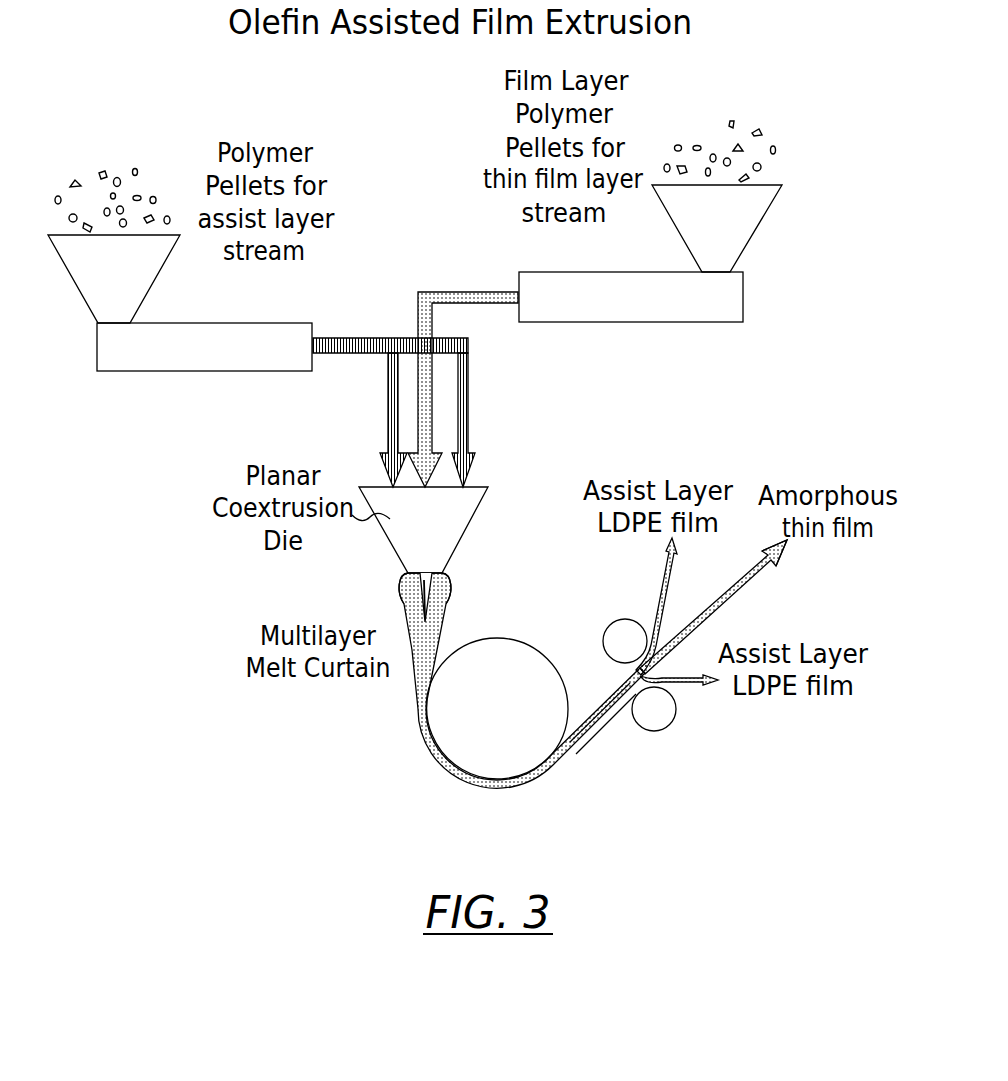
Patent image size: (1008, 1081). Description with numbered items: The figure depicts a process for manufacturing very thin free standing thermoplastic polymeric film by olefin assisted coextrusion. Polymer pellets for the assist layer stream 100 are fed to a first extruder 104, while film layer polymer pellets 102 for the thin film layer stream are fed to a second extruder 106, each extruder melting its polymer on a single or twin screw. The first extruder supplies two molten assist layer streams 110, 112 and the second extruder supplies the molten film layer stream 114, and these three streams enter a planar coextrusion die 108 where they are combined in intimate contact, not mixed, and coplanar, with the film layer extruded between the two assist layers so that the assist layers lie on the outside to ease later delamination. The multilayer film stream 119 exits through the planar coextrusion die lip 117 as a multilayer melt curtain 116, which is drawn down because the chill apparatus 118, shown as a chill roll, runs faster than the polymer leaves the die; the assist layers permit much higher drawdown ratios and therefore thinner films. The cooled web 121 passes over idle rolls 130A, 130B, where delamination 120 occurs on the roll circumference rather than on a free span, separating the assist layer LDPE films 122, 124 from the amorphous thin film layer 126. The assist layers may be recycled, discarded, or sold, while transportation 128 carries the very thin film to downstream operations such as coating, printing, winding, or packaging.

The assist layer prior to extrusion 100 is at (102, 175).
The film layer prior to extrusion 102 is at (763, 132).
The first extruder 104 is at (108, 372).
The second extruder 106 is at (745, 287).
The planar coextrusion die 108 is at (406, 537).
The assist layer after extrusion and prior to die 110 is at (392, 424).
The assist layer after extrusion and prior to die 112 is at (468, 420).
The film layer after extrusion and prior to die 114 is at (425, 385).
The multilayer melt curtain 116 is at (425, 661).
The planar coextrusion die lip 117 is at (408, 585).
The chill apparatus 118 is at (529, 767).
The multilayer film stream 119 is at (437, 588).
The delamination 120 is at (618, 690).
The web 121 is at (602, 721).
The assist layer after delamination 122 is at (660, 576).
The assist layer after delamination 124 is at (692, 684).
The film layer after delamination 126 is at (731, 597).
The transportation of very thin film to downstream operations 128 is at (782, 552).
The idle roll 130A is at (660, 712).
The idle roll 130B is at (623, 631).